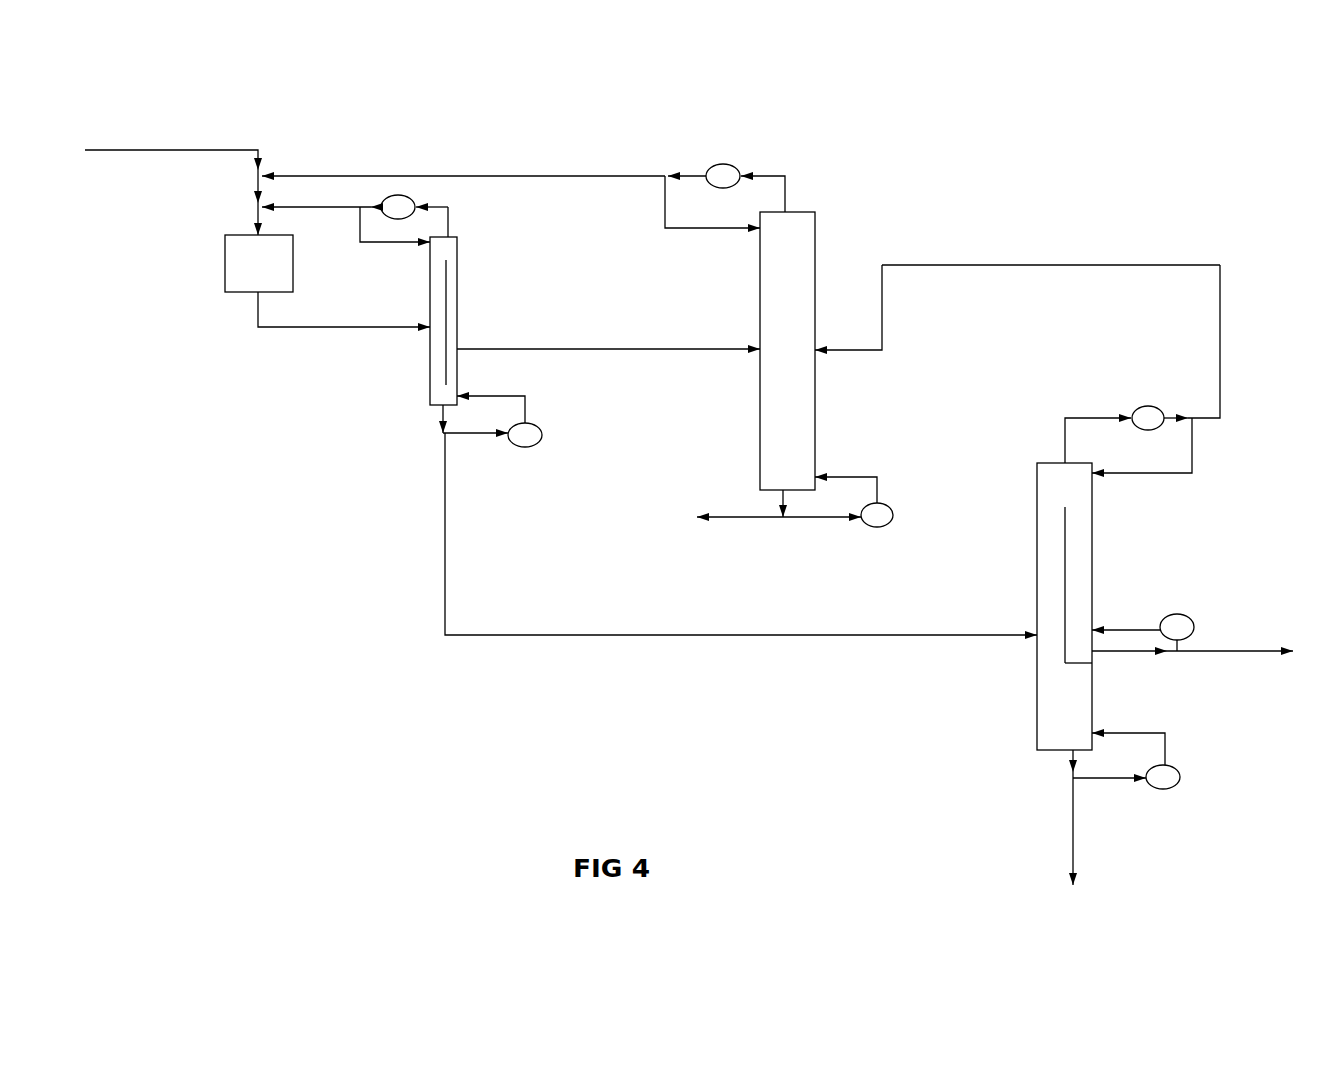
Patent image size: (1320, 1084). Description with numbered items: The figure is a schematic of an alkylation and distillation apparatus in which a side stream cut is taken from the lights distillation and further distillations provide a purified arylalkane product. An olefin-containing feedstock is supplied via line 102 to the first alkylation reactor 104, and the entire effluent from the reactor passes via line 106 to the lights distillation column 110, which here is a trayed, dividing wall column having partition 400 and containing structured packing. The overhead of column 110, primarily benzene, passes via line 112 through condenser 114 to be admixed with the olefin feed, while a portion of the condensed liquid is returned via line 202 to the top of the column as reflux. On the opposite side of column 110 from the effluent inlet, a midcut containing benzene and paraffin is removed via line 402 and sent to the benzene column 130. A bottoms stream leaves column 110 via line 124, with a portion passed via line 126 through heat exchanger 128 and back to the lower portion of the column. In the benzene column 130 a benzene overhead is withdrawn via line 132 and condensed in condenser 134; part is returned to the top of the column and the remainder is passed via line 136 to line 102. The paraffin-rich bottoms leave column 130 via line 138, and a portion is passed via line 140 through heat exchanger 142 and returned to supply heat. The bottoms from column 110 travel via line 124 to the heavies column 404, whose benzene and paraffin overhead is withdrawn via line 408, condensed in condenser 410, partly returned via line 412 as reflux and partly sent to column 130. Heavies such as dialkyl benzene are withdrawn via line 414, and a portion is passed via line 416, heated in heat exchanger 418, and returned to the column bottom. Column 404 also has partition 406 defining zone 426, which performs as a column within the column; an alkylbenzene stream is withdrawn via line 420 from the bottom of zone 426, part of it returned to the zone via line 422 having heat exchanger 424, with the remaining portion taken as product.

The line 102 is at (152, 150).
The first alkylation reactor 104 is at (238, 235).
The line 106 is at (258, 297).
The lights distillation column 110 is at (460, 270).
The line 112 is at (450, 212).
The condenser 114 is at (440, 193).
The line 124 is at (443, 465).
The line 126 is at (478, 437).
The heat exchanger 128 is at (538, 423).
The benzene column 130 is at (762, 400).
The line 132 is at (758, 175).
The condenser 134 is at (718, 163).
The line 136 is at (445, 175).
The line 138 is at (765, 498).
The line 140 is at (812, 520).
The heat exchanger 142 is at (892, 507).
The line 202 is at (385, 242).
The partition 400 is at (442, 292).
The line 402 is at (617, 349).
The heavies column 404 is at (1035, 482).
The partition 406 is at (1065, 522).
The line 408 is at (1082, 417).
The condenser 410 is at (1145, 405).
The line 412 is at (1193, 442).
The line 414 is at (1070, 755).
The line 416 is at (1107, 778).
The heat exchanger 418 is at (1182, 772).
The line 420 is at (1123, 652).
The line 422 is at (1115, 625).
The heat exchanger 424 is at (1195, 623).
The zone 426 is at (1083, 555).